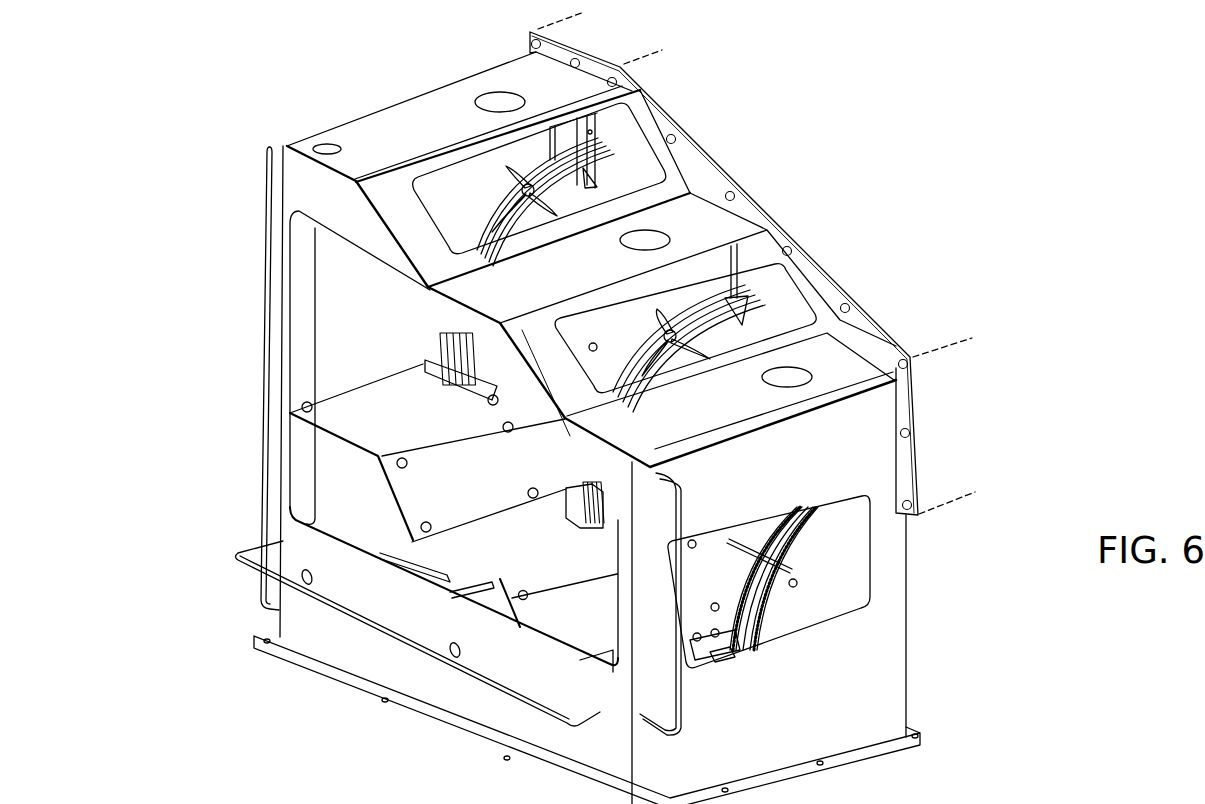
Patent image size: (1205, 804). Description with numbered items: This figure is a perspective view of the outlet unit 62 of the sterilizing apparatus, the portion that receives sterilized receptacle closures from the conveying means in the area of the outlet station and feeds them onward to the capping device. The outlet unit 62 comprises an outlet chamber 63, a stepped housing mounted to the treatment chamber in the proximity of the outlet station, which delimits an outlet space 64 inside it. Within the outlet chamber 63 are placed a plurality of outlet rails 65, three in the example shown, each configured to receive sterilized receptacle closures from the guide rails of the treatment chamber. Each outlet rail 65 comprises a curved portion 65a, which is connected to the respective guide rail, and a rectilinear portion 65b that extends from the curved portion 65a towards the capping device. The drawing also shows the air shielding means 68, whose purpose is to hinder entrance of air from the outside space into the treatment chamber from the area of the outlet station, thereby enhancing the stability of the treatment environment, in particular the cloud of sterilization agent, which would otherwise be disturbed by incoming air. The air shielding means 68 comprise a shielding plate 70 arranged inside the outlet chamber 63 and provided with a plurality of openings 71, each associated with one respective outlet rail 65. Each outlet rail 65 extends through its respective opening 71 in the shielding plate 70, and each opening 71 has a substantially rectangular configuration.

The outlet unit 62 is at (210, 112).
The outlet chamber 63 is at (417, 117).
The outlet space 64 is at (473, 432).
The outlet rail 65 is at (543, 152).
The curved portion 65a is at (593, 143).
The rectilinear portion 65b is at (412, 374).
The air shielding means 68 is at (432, 576).
The shielding plate 70 is at (503, 587).
The opening 71 is at (456, 368).